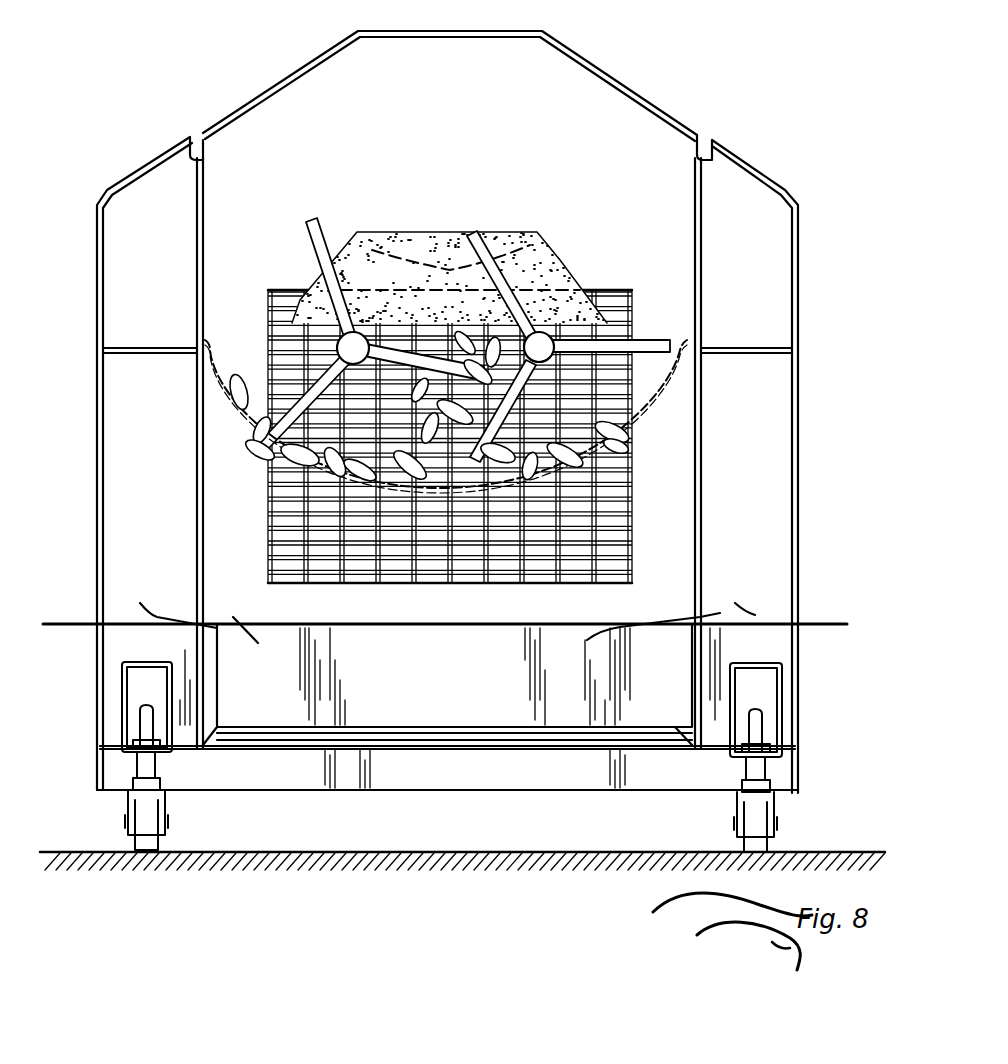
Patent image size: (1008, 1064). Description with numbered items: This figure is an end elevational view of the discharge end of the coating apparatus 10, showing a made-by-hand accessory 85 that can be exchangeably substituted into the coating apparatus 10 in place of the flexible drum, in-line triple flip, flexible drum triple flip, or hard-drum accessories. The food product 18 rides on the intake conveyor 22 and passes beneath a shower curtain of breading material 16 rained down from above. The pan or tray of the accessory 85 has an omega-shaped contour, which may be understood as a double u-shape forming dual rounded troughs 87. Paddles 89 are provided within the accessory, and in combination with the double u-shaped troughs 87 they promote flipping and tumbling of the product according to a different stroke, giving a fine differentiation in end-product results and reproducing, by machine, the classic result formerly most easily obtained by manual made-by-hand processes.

The coating apparatus 10 is at (162, 77).
The breading material 16 is at (552, 266).
The food product 18 is at (446, 411).
The intake conveyor 22 is at (615, 523).
The made by hand accessory 85 is at (465, 305).
The rounded troughs 87 is at (256, 444).
The paddles 89 is at (325, 232).